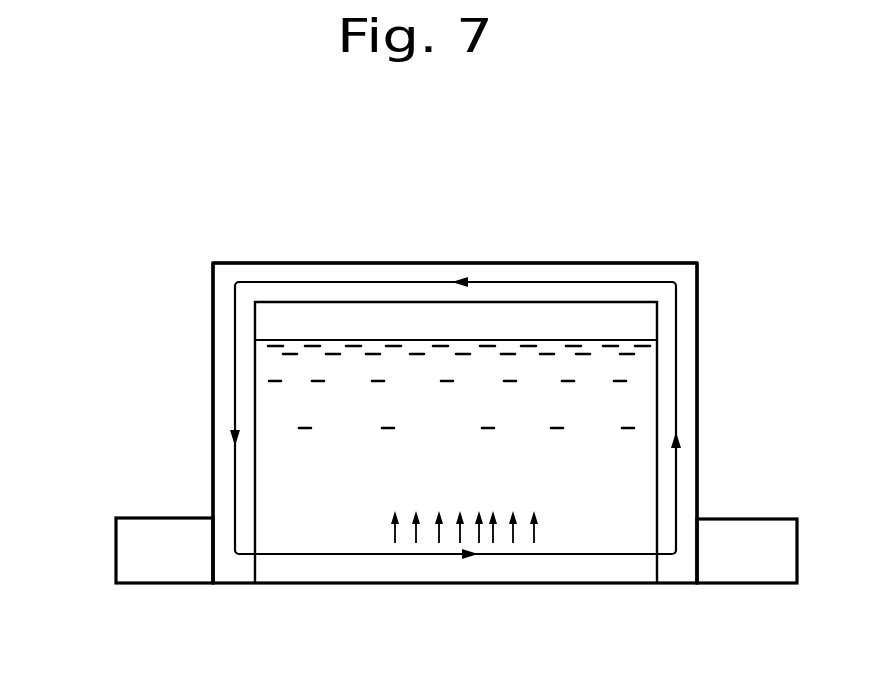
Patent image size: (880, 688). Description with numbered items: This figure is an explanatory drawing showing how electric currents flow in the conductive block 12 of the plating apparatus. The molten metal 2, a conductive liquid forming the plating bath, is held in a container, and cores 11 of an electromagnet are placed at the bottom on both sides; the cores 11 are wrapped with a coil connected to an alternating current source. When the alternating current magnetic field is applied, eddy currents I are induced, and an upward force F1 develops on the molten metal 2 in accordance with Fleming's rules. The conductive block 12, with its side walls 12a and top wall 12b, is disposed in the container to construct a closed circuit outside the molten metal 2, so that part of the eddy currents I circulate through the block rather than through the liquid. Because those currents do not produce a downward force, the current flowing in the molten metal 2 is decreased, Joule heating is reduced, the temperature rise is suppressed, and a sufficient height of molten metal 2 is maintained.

The molten metal 2 is at (593, 508).
The cores 11 is at (113, 533).
The conductive block 12 is at (686, 252).
The side walls of housing 12a is at (220, 378).
The top wall of housing 12b is at (422, 283).
The eddy currents I is at (682, 383).
The force F1 is at (464, 503).